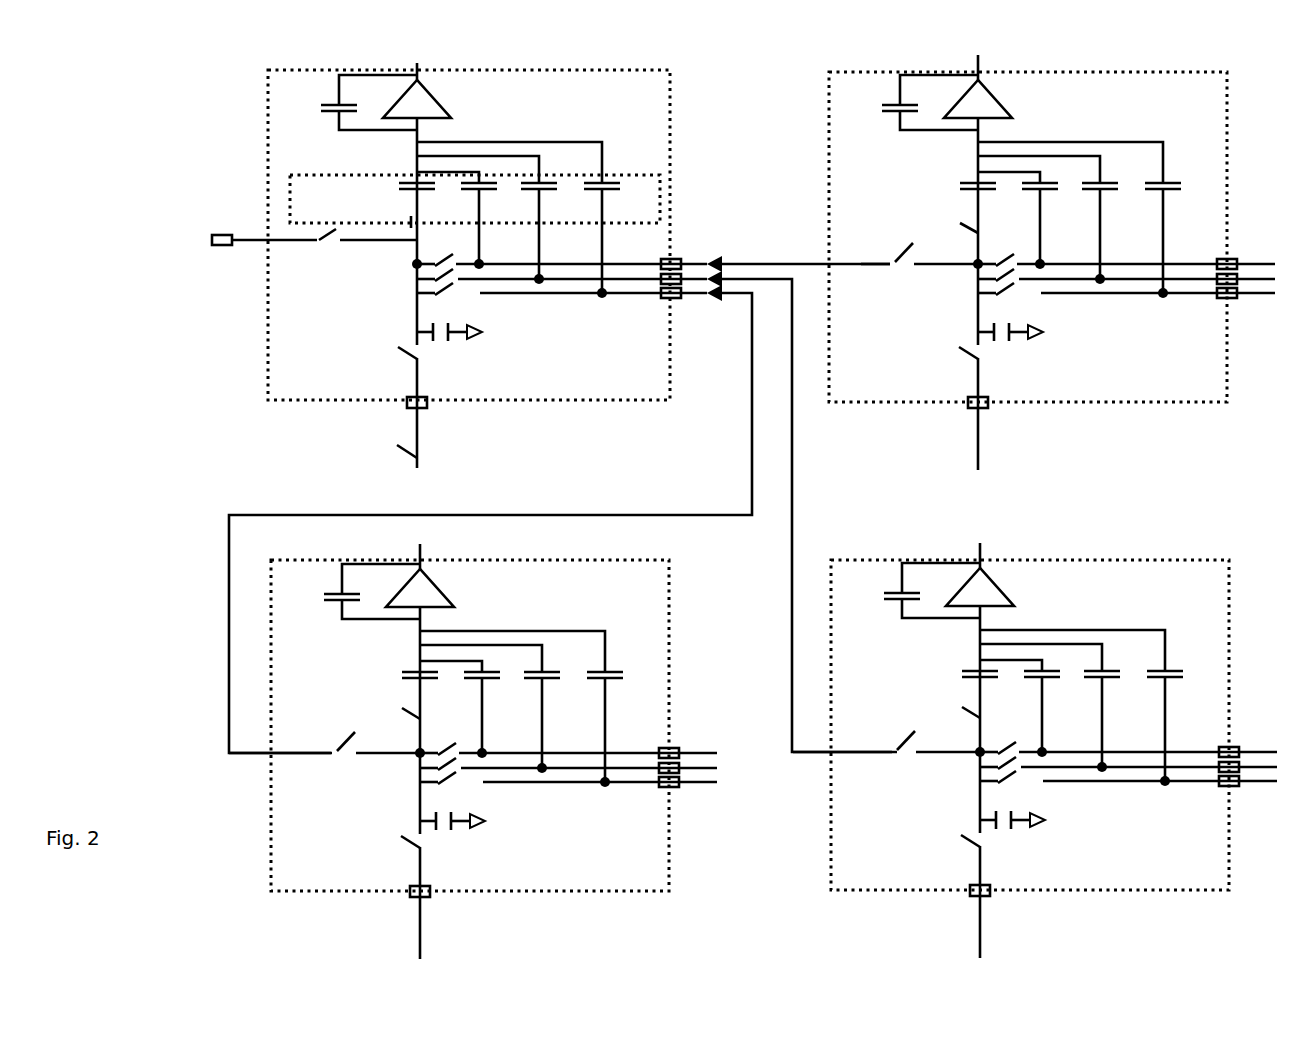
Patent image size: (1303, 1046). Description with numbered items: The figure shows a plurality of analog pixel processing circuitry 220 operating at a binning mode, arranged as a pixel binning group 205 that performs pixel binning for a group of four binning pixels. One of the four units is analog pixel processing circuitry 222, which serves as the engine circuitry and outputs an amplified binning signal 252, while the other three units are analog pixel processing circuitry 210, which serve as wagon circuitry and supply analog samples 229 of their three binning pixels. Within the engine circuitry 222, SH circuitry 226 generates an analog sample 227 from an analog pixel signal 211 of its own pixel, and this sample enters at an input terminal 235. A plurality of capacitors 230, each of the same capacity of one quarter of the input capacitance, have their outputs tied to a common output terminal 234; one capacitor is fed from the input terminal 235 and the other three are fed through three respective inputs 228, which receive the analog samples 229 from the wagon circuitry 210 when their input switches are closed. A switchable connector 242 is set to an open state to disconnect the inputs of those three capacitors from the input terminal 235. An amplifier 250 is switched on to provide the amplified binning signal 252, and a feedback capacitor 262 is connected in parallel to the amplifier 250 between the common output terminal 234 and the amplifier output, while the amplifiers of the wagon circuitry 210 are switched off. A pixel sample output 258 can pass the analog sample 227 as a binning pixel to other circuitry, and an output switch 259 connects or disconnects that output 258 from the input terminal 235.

The pixel binning group 205 is at (125, 515).
The analog pixel processing circuitry 210 is at (671, 73).
The analog pixel signal 211 is at (397, 417).
The analog pixel processing circuitry 220 is at (182, 877).
The analog pixel processing circuitry 222 is at (670, 122).
The SH circuitry 226 is at (383, 332).
The analog sample 227 is at (412, 316).
The inputs 228 is at (648, 303).
The analog samples 229 is at (742, 248).
The capacitors 230 is at (653, 175).
The common output terminal 234 is at (390, 155).
The input terminal 235 is at (405, 247).
The switchable connector 242 is at (470, 307).
The amplifier 250 is at (433, 105).
The amplified binning signal 252 is at (425, 68).
The pixel sample output 258 is at (212, 237).
The output switch 259 is at (316, 269).
The feedback capacitor 262 is at (295, 112).